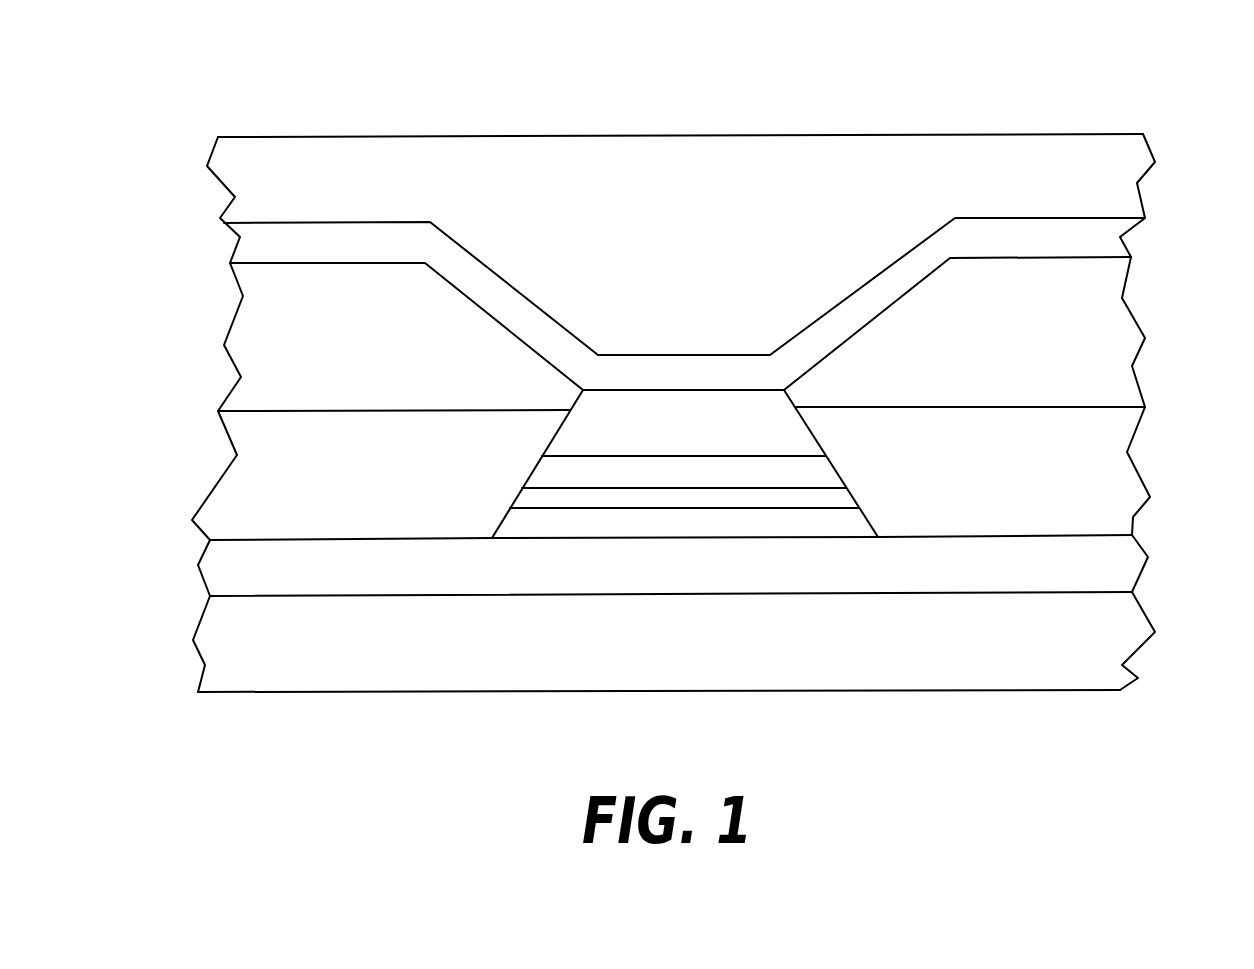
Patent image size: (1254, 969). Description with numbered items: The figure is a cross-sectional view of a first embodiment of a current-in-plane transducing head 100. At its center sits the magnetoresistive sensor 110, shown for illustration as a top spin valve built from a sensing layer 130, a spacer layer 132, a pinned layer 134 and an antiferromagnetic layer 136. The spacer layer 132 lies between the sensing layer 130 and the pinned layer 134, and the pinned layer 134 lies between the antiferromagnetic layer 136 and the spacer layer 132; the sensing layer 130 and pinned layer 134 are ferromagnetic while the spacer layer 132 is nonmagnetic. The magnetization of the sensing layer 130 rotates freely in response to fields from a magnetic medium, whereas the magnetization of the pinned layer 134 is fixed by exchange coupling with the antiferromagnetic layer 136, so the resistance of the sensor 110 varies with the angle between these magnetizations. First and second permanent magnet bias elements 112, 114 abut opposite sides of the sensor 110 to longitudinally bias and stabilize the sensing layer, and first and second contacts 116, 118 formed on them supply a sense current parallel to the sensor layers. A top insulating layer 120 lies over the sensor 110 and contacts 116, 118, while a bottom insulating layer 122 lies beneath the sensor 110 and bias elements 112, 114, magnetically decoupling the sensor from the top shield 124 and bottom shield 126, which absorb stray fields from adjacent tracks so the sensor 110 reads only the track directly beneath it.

The current-in-plane transducing head 100 is at (354, 101).
The magnetoresistive sensor 110 is at (680, 390).
The first permanent magnet bias element 112 is at (290, 468).
The second permanent magnet bias element 114 is at (1105, 441).
The first contact 116 is at (303, 353).
The second contact 118 is at (1090, 322).
The top insulating layer 120 is at (1083, 238).
The bottom insulating layer 122 is at (1117, 559).
The top shield 124 is at (1105, 178).
The bottom shield 126 is at (1112, 639).
The sensing layer 130 is at (840, 524).
The spacer layer 132 is at (833, 497).
The pinned layer 134 is at (805, 470).
The antiferromagnetic layer 136 is at (775, 424).